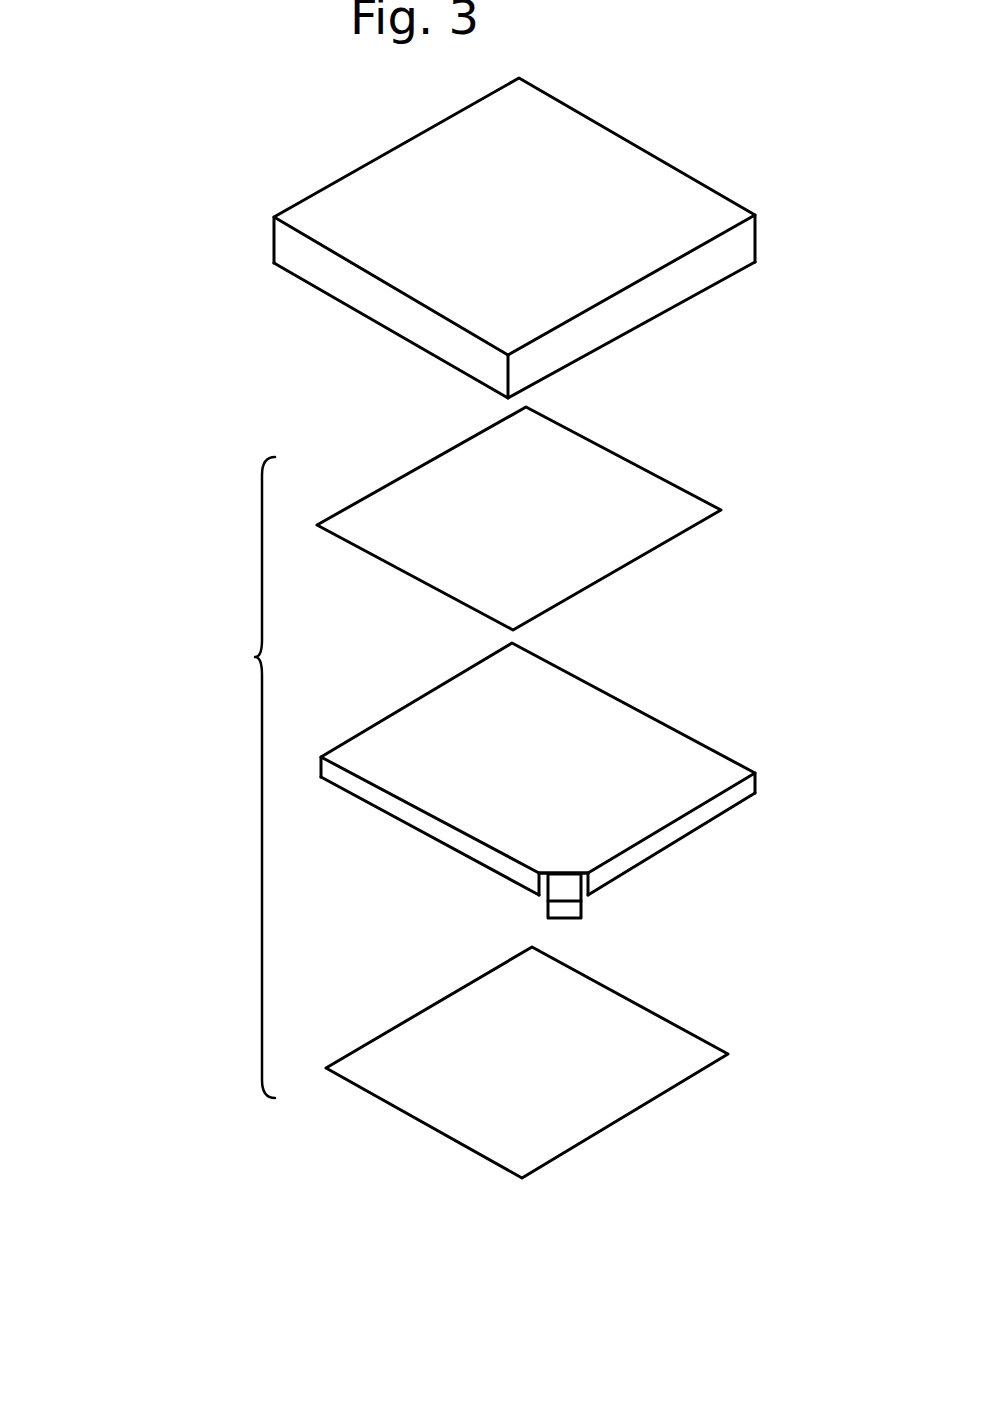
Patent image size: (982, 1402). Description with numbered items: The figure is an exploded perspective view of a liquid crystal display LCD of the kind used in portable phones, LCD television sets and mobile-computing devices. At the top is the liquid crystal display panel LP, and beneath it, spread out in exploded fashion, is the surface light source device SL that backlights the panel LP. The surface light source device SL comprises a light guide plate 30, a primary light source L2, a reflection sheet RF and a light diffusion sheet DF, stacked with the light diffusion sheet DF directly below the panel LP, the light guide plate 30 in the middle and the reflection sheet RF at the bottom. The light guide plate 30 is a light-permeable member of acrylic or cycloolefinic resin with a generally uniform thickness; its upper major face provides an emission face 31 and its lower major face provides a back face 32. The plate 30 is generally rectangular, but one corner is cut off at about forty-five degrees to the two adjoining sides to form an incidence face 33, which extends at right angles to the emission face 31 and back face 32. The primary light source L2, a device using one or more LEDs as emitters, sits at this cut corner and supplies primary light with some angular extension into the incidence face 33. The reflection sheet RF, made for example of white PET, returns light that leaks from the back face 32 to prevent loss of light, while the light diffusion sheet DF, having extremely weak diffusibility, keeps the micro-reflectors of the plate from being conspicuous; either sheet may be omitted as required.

The liquid crystal display panel LP is at (325, 198).
The light diffusion sheet DF is at (657, 486).
The light guide plate 30 is at (538, 790).
The emission face 31 is at (582, 713).
The back face 32 is at (400, 840).
The incidence face 33 is at (584, 890).
The primary light source L2 is at (568, 914).
The reflection sheet RF is at (675, 1037).
The surface light source device SL is at (251, 777).
The liquid crystal display LCD is at (237, 1177).